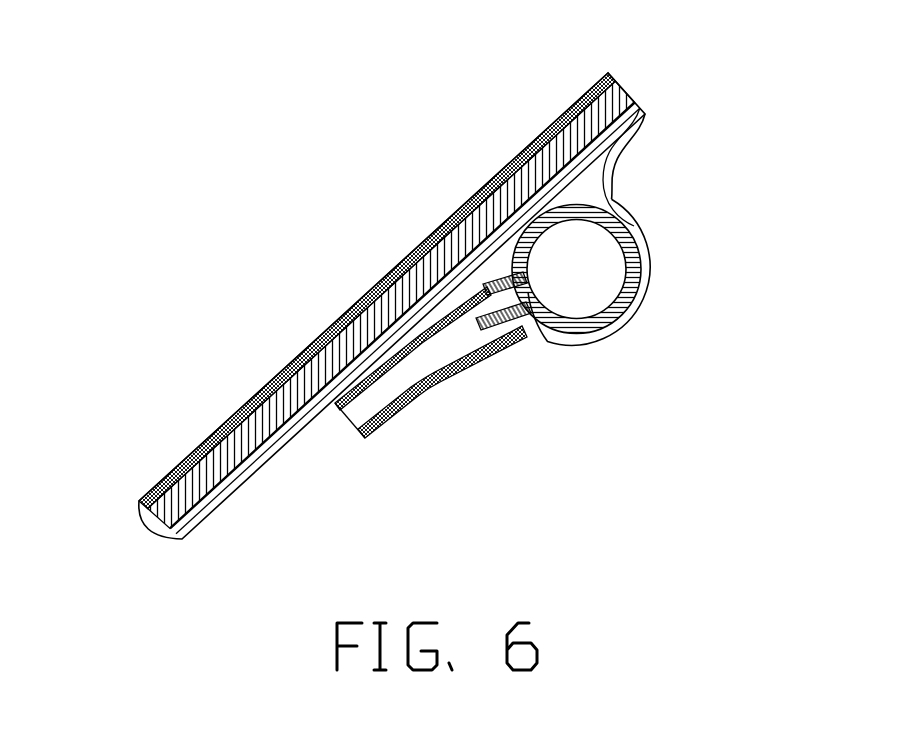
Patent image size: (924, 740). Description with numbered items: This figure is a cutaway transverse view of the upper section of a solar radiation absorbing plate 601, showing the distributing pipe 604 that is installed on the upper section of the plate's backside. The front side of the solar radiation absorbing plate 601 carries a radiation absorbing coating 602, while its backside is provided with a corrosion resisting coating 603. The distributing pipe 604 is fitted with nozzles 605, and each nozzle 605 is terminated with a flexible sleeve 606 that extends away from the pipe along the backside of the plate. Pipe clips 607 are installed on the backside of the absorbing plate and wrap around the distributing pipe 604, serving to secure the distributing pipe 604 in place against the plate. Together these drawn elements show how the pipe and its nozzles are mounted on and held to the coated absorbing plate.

The solar radiation absorbing plate 601 is at (488, 208).
The radiation absorbing coating 602 is at (270, 380).
The corrosion resisting coating 603 is at (578, 166).
The distributing pipe 604 is at (607, 325).
The nozzle 605 is at (515, 320).
The flexible sleeve 606 is at (428, 394).
The pipe clip 607 is at (640, 312).